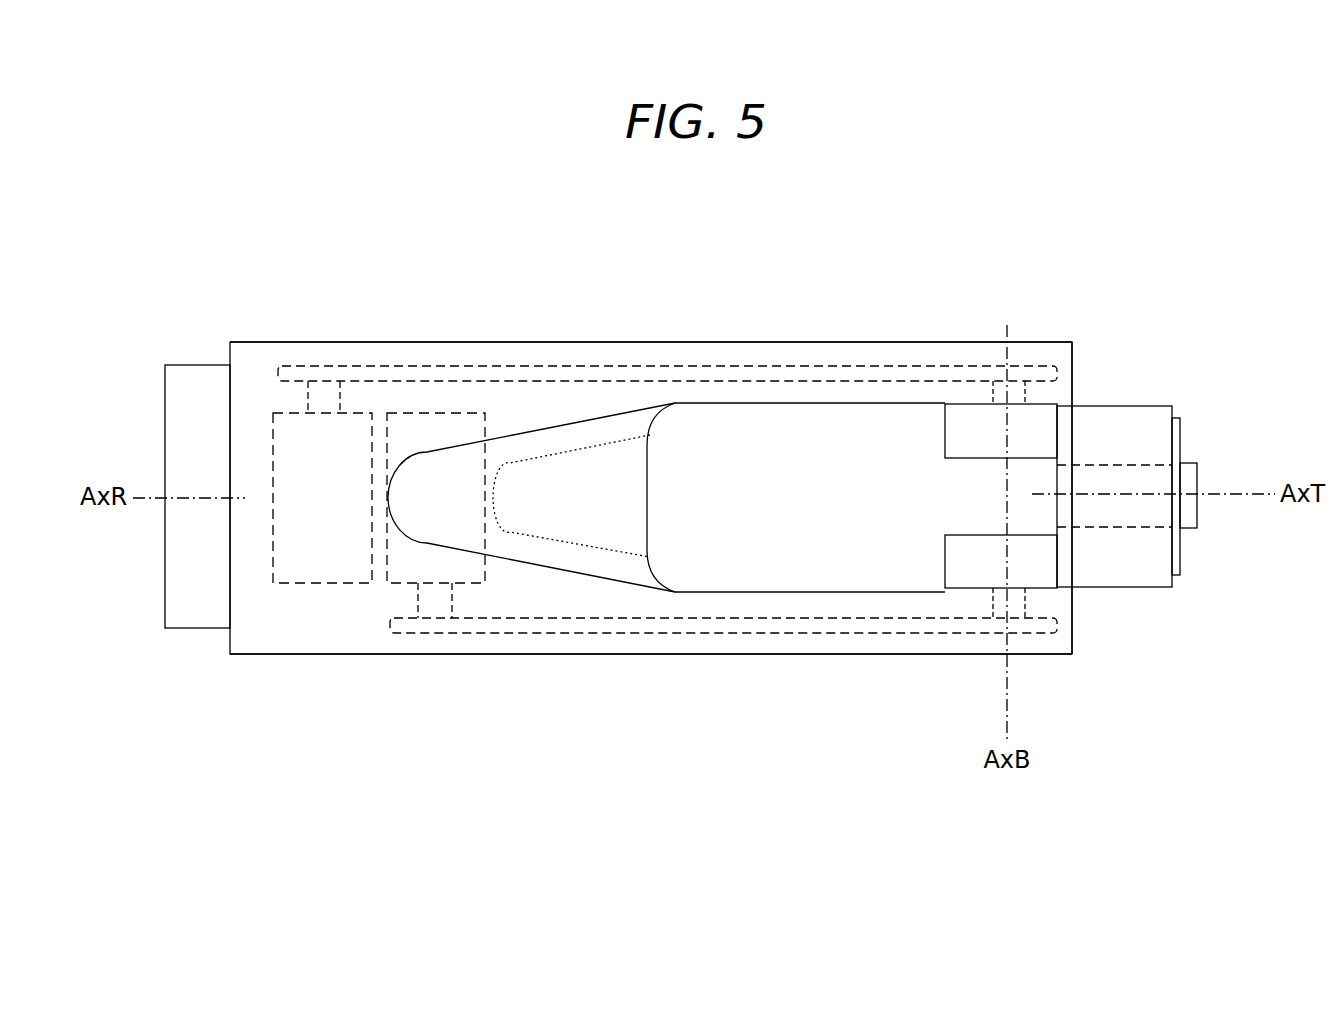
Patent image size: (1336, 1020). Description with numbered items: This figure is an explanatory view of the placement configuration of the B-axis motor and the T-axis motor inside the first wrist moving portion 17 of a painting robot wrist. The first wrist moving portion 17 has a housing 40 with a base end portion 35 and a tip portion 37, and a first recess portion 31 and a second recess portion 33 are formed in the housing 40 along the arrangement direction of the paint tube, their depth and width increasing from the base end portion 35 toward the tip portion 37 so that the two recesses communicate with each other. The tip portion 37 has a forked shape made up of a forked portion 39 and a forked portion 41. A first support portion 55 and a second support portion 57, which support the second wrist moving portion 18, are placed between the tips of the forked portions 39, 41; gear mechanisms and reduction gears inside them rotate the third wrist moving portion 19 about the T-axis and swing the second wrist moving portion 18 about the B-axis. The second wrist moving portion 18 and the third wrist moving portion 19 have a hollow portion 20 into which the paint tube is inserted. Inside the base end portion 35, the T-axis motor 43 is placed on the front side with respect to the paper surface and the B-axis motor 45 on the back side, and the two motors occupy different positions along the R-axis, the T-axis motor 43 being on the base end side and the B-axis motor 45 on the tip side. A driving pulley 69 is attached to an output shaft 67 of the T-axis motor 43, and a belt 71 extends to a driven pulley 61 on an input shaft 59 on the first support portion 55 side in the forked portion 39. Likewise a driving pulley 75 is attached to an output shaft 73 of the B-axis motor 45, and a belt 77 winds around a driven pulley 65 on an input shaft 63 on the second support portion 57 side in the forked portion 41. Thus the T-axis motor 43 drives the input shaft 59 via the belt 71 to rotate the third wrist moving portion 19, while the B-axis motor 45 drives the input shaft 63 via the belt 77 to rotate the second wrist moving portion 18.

The first wrist moving portion 17 is at (660, 305).
The second wrist moving portion 18 is at (1138, 425).
The third wrist moving portion 19 is at (1182, 438).
The hollow portion 20 is at (1138, 528).
The first recess portion 31 is at (592, 435).
The second recess portion 33 is at (602, 528).
The base end portion 35 is at (386, 340).
The tip portion 37 is at (1057, 338).
The forked portion 39 is at (826, 356).
The housing 40 is at (541, 340).
The forked portion 41 is at (800, 641).
The T-axis motor 43 is at (322, 566).
The B-axis motor 45 is at (440, 432).
The first support portion 55 is at (955, 420).
The second support portion 57 is at (955, 558).
The input shaft 59 is at (998, 367).
The driven pulley 61 is at (1027, 363).
The input shaft 63 is at (1000, 639).
The driven pulley 65 is at (1025, 641).
The output shaft 67 is at (317, 390).
The driving pulley 69 is at (338, 372).
The belt 71 is at (719, 373).
The output shaft 73 is at (437, 603).
The driving pulley 75 is at (461, 641).
The belt 77 is at (683, 636).